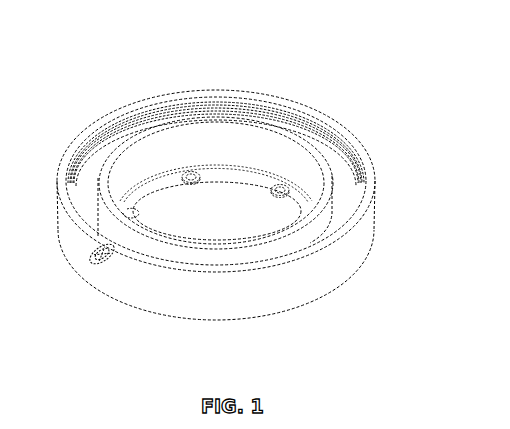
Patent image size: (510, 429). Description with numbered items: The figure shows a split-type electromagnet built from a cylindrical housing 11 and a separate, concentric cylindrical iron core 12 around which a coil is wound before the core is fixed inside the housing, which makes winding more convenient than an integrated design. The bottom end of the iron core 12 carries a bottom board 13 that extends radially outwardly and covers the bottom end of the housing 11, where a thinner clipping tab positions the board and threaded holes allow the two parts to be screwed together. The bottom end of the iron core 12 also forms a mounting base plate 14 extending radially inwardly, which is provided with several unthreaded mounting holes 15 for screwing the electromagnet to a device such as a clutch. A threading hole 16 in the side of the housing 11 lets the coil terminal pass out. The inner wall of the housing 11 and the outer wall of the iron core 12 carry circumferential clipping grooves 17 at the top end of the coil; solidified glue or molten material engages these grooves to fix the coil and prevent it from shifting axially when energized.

The housing 11 is at (366, 180).
The iron core 12 is at (320, 168).
The bottom board 13 is at (88, 197).
The mounting base plate 14 is at (152, 193).
The mounting holes 15 is at (197, 173).
The threading hole 16 is at (105, 262).
The clipping grooves 17 is at (260, 100).